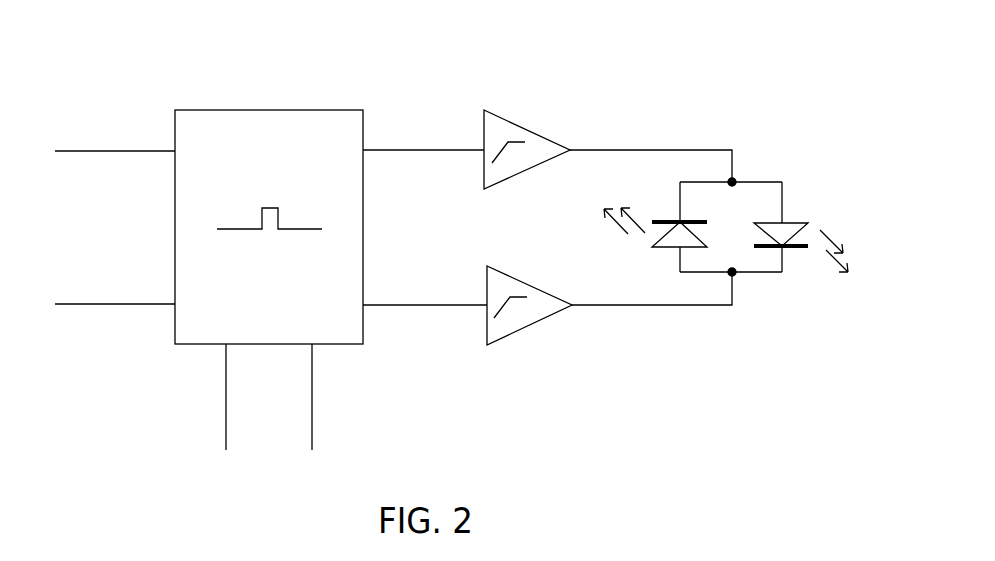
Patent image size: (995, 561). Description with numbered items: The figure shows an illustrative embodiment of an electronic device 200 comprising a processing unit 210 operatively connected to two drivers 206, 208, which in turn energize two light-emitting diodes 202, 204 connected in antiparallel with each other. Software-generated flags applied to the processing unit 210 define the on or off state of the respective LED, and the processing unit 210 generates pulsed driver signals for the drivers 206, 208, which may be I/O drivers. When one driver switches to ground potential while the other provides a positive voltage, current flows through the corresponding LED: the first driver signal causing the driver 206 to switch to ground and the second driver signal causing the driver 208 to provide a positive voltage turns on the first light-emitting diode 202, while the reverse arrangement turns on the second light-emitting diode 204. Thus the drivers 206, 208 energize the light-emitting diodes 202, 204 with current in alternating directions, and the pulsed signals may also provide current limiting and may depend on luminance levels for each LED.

The electronic device 200 is at (236, 81).
The processing unit 210 is at (300, 110).
The driver 206 is at (535, 162).
The driver 208 is at (535, 323).
The light-emitting diode 202 is at (675, 247).
The light-emitting diode 204 is at (775, 222).